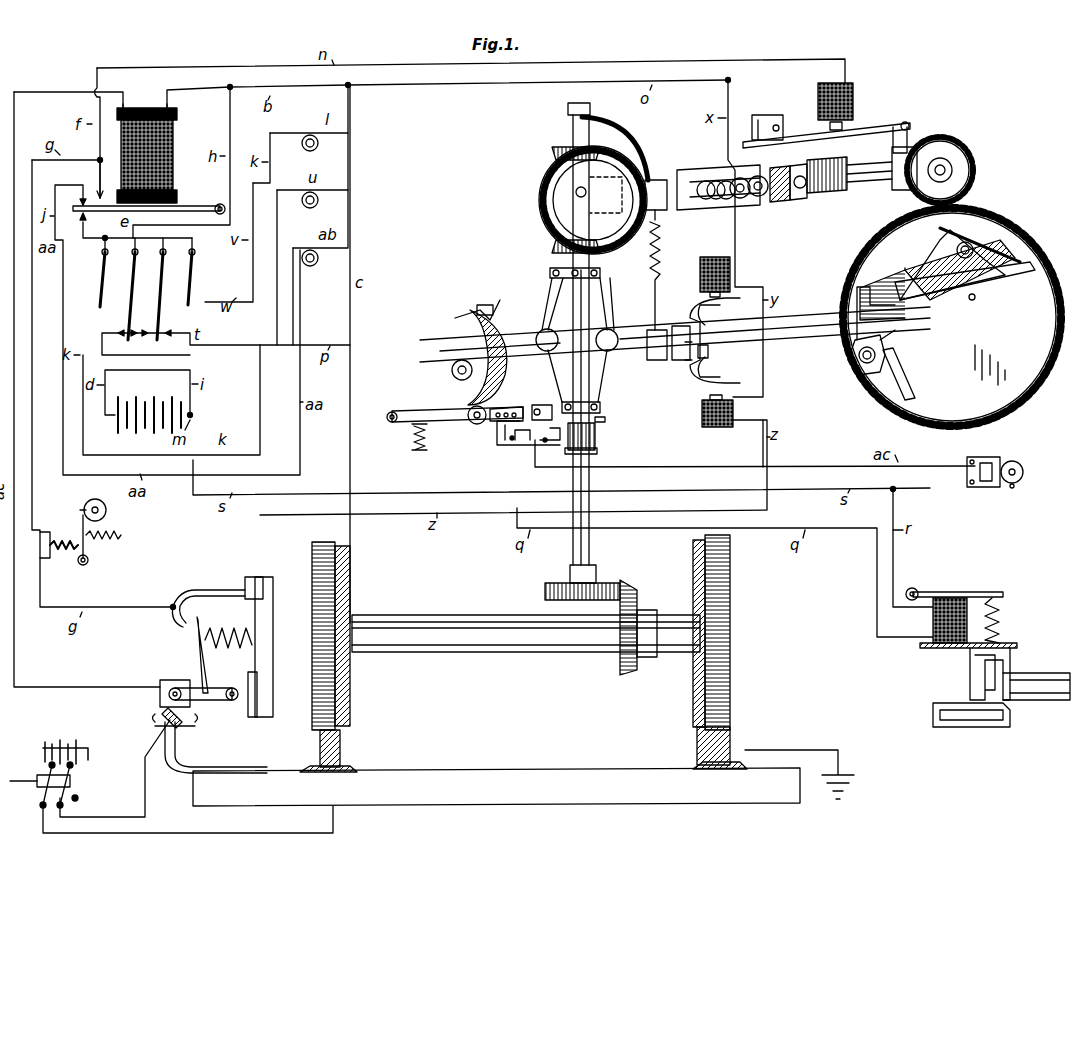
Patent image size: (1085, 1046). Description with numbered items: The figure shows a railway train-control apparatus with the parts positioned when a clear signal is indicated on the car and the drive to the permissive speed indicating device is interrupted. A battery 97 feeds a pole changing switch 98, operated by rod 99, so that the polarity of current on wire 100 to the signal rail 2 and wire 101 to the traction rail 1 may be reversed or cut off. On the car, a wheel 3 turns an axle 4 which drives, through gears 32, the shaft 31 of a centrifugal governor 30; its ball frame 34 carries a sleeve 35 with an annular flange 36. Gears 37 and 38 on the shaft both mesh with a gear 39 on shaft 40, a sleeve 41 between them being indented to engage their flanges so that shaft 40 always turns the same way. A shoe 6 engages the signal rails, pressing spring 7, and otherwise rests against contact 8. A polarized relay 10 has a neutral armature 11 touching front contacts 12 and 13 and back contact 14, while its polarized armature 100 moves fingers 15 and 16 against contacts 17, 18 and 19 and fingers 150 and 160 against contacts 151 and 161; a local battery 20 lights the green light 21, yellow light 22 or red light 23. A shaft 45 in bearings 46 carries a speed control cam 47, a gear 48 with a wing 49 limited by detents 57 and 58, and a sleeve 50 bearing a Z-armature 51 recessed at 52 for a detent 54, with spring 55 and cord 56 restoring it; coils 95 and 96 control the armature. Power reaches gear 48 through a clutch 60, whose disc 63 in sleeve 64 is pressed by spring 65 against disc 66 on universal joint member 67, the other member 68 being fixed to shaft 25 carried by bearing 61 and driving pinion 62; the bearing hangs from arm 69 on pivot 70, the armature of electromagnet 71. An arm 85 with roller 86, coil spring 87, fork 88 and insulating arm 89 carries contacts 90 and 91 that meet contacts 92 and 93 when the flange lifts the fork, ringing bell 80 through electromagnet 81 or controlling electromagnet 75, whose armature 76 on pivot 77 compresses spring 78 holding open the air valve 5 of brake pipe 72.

The traction rail 1 is at (341, 750).
The signal rail 2 is at (160, 713).
The wheel 3 is at (350, 688).
The axle 4 is at (490, 655).
The train pipe air valve 5 is at (968, 660).
The shoe 6 is at (163, 680).
The spring 7 is at (224, 650).
The contact 8 is at (175, 595).
The polarized relay 10 is at (178, 140).
The neutral armature 11 is at (205, 206).
The front contact 12 is at (104, 197).
The front contact 13 is at (82, 202).
The back contact 14 is at (88, 222).
The finger 15 is at (104, 273).
The finger 16 is at (158, 298).
The contact 17 is at (120, 331).
The contact 18 is at (143, 330).
The contact 19 is at (170, 331).
The local battery 20 is at (149, 401).
The green light 21 is at (300, 134).
The yellow light 22 is at (312, 173).
The red light 23 is at (320, 230).
The shaft 25 is at (872, 184).
The centrifugal governor 30 is at (560, 322).
The governor shaft 31 is at (592, 302).
The gears 32 is at (628, 588).
The ball frame 34 is at (600, 273).
The sleeve 35 is at (596, 436).
The annular flange 36 is at (598, 452).
The gear 37 is at (552, 155).
The gear 38 is at (556, 247).
The gear 39 is at (640, 160).
The shaft 40 is at (660, 210).
The sleeve 41 is at (562, 192).
The shaft 45 is at (815, 335).
The bearings 46 is at (498, 318).
The speed control cam 47 is at (463, 327).
The gear 48 is at (952, 317).
The wing 49 is at (990, 292).
The sleeve 50 is at (681, 335).
The Z-armature 51 is at (722, 312).
The recess 52 is at (702, 362).
The detent 54 is at (688, 362).
The spring 55 is at (662, 255).
The cord 56 is at (652, 330).
The detent 57 is at (1015, 250).
The detent 58 is at (908, 360).
The clutch 60 is at (762, 197).
The bearing 61 is at (902, 190).
The pinion 62 is at (970, 148).
The disc 63 is at (744, 200).
The sleeve 64 is at (715, 170).
The spring 65 is at (712, 200).
The disc 66 is at (790, 170).
The universal joint member 67 is at (806, 168).
The universal joint member 68 is at (832, 193).
The arm 69 is at (900, 124).
The pivot 70 is at (784, 122).
The electromagnet 71 is at (853, 100).
The air pipe 72 is at (1052, 665).
The electromagnet 75 is at (933, 620).
The armature 76 is at (958, 583).
The pivot 77 is at (918, 590).
The spring 78 is at (1000, 618).
The bell 80 is at (1023, 474).
The electromagnet 81 is at (985, 488).
The arm 85 is at (440, 412).
The roller 86 is at (476, 425).
The coil spring 87 is at (411, 440).
The fork 88 is at (606, 420).
The supplemental arm 89 is at (497, 440).
The contact member 90 is at (512, 442).
The contact member 91 is at (548, 442).
The contact member 92 is at (530, 412).
The contact member 93 is at (544, 404).
The coil 95 is at (731, 270).
The coil 96 is at (702, 413).
The battery 97 is at (66, 740).
The pole changing switch 98 is at (74, 779).
The rod 99 is at (26, 790).
The wire 100 is at (157, 255).
The wire 101 is at (190, 826).
The finger 150 is at (103, 268).
The contact 151 is at (101, 288).
The finger 160 is at (188, 284).
The contact 161 is at (200, 298).